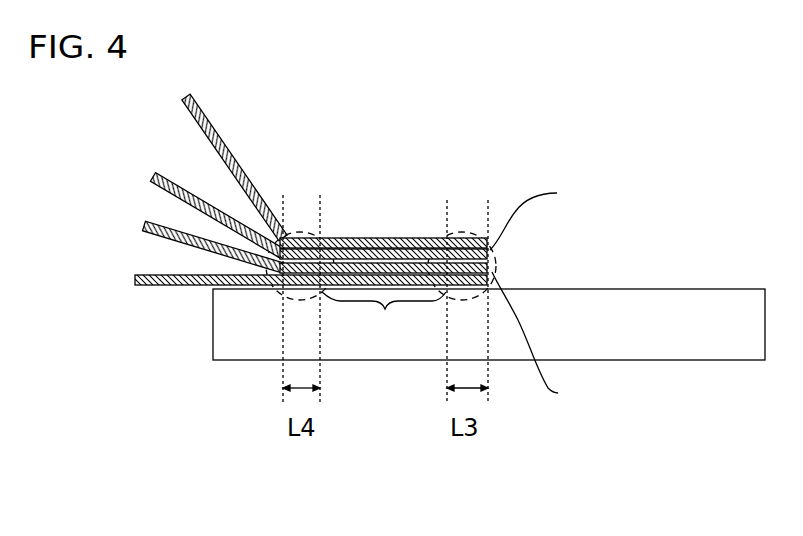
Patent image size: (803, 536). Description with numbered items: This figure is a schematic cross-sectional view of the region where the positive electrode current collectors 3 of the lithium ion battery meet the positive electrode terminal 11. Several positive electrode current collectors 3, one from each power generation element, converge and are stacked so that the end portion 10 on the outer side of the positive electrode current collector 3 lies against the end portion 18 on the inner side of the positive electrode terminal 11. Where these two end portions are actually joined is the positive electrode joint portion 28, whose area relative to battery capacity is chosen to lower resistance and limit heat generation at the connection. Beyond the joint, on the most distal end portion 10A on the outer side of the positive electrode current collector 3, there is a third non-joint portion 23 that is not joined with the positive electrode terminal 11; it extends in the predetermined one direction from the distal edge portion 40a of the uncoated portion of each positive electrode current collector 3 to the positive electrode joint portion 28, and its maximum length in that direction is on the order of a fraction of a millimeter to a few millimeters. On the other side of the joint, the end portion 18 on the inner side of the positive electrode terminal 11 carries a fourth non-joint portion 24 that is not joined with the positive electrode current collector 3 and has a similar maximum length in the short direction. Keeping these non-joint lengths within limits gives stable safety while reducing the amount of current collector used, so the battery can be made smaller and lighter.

The positive electrode current collector 3 is at (218, 155).
The end portion on the outer side of the positive electrode current collector 10 is at (385, 238).
The most distal end portion on the outer side of the positive electrode current coll 10A is at (468, 238).
The fourth non-joint portion 24 is at (300, 235).
The positive electrode joint portion 28 is at (385, 310).
The end portion on the inner side of the positive electrode terminal 18 is at (383, 333).
The positive electrode terminal 11 is at (697, 337).
The third non-joint portion 23 is at (497, 257).
The distal edge portion of the uncoated portion 40a is at (546, 296).